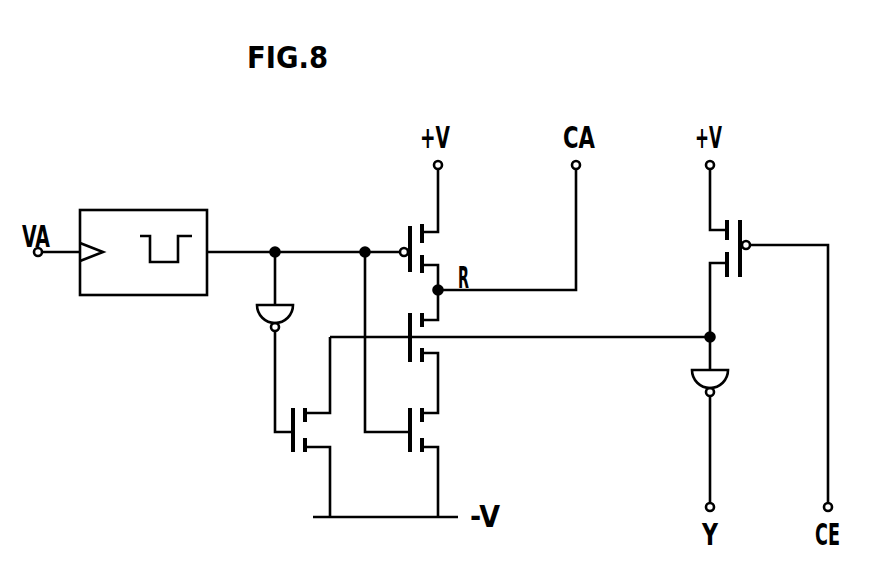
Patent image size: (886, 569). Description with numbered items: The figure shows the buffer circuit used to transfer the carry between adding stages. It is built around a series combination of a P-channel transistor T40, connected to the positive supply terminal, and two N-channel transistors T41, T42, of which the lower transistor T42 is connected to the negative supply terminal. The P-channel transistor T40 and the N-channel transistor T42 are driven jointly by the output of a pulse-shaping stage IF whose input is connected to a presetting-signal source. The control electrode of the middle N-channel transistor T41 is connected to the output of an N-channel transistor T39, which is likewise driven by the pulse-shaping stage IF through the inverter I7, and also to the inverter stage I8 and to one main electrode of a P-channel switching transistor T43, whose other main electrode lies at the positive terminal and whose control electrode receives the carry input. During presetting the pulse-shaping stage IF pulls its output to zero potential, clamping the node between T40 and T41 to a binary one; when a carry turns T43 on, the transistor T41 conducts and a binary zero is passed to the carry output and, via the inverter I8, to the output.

The pulse-shaping stage IF is at (143, 252).
The N-channel transistor T39 is at (289, 438).
The P-channel transistor T40 is at (402, 238).
The middle N-channel transistor T41 is at (421, 329).
The N-channel transistor T42 is at (411, 422).
The P-channel switching transistor T43 is at (742, 238).
The inverter I7 is at (264, 333).
The inverter stage I8 is at (701, 397).